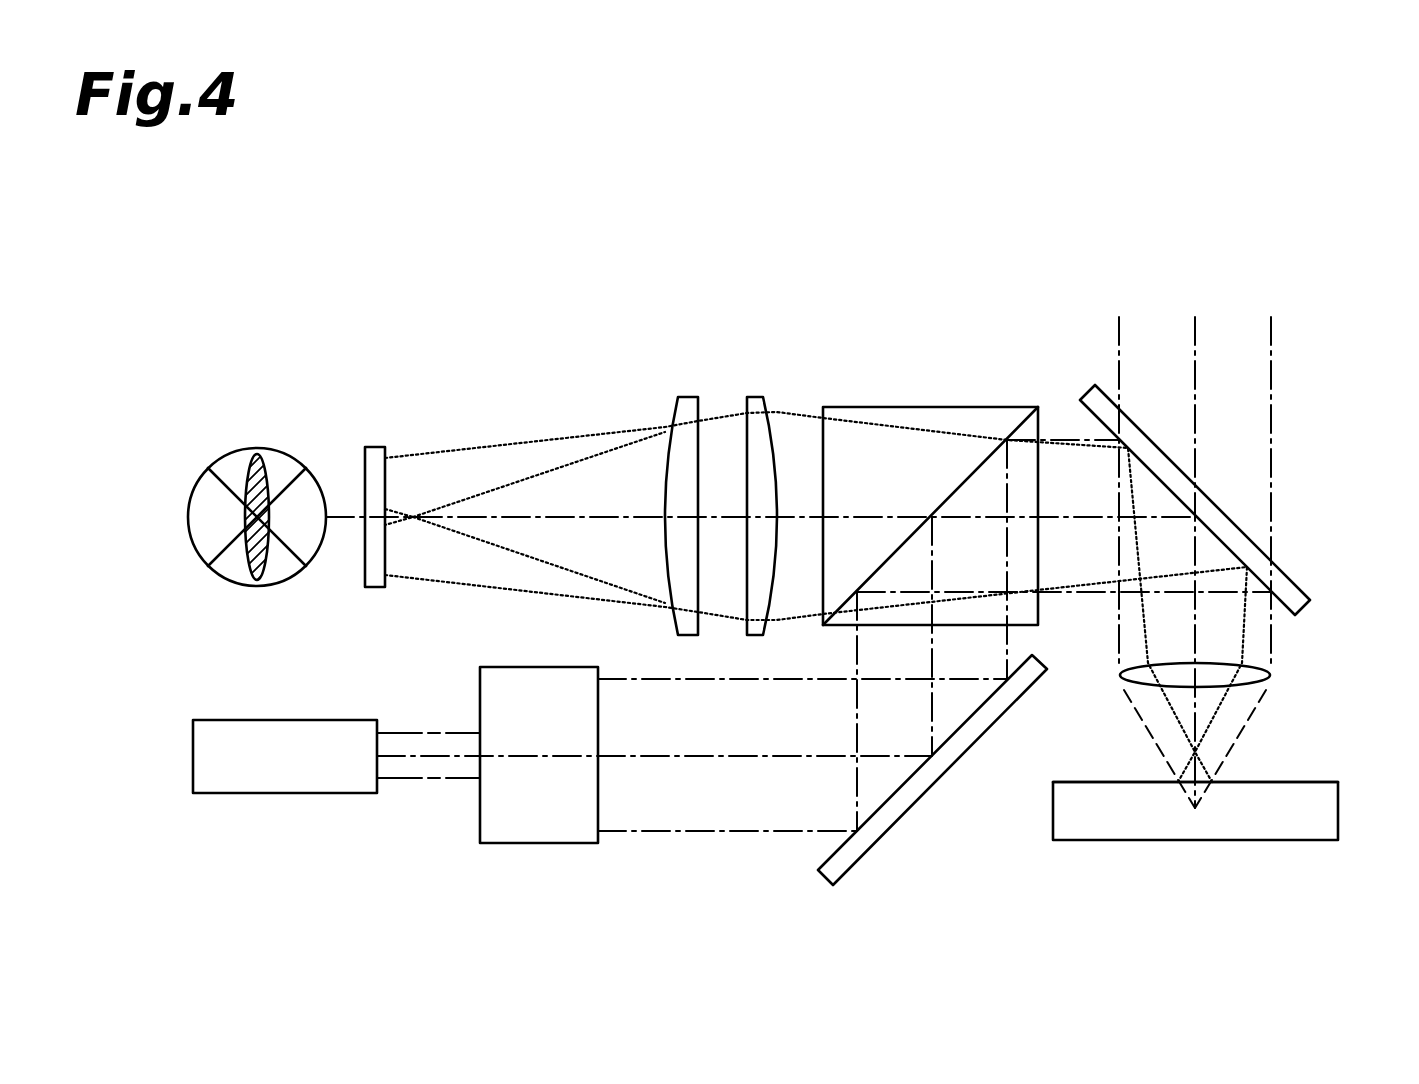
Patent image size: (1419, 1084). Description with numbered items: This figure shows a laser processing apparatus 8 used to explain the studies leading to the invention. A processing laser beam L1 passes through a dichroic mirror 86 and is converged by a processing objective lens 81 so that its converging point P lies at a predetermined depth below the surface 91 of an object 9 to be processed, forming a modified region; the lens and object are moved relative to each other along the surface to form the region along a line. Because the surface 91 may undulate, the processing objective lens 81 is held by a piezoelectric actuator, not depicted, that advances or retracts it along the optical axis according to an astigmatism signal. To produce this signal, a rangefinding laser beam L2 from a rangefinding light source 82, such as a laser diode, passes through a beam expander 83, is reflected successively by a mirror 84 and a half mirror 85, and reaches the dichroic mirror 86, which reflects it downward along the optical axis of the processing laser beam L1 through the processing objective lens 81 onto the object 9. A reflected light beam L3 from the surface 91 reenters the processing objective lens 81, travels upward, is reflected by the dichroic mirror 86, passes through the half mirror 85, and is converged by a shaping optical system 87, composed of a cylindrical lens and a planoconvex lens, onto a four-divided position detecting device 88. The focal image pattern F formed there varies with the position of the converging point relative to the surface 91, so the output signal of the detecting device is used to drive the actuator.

The laser processing apparatus 8 is at (1222, 210).
The object to be processed 9 is at (1323, 810).
The surface 91 is at (1293, 782).
The processing objective lens 81 is at (1250, 665).
The rangefinding light source 82 is at (277, 793).
The beam expander 83 is at (540, 843).
The mirror 84 is at (893, 825).
The half mirror 85 is at (930, 407).
The dichroic mirror 86 is at (1298, 592).
The shaping optical system 87 is at (677, 387).
The four-divided position detecting device 88 is at (375, 447).
The focal image pattern F is at (267, 523).
The converging point P is at (1196, 810).
The processing laser beam L1 is at (1271, 417).
The rangefinding laser beam L2 is at (723, 831).
The reflected light beam L3 is at (527, 440).